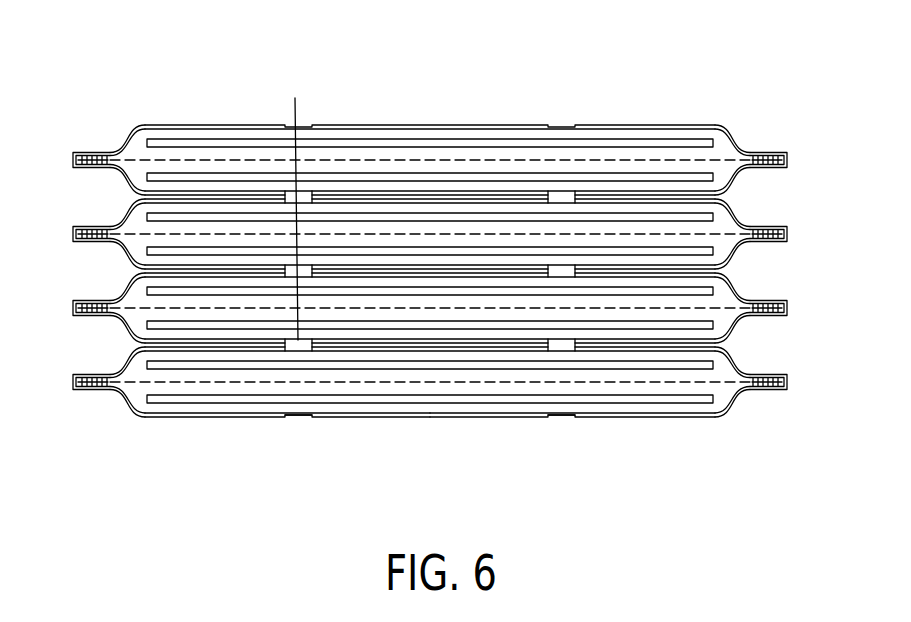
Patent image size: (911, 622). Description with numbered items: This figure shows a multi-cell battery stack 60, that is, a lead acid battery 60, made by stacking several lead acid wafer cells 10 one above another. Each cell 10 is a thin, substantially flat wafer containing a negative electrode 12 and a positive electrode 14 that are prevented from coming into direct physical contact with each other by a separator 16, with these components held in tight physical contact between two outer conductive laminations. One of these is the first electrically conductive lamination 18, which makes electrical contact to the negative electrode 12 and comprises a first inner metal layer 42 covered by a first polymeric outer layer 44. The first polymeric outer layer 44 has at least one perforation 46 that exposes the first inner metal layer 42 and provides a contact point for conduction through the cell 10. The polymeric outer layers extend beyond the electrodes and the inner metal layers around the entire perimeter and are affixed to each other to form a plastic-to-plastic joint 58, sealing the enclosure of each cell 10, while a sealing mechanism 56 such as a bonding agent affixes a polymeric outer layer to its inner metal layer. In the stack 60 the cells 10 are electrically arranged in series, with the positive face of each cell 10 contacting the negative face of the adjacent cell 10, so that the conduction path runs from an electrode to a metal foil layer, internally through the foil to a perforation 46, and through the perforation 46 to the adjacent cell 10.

The lead acid wafer cell 10 is at (772, 132).
The negative electrode 12 is at (143, 352).
The positive electrode 14 is at (213, 403).
The separator 16 is at (137, 410).
The first electrically conductive lamination 18 is at (178, 418).
The first inner metal layer 42 is at (610, 403).
The first polymeric outer layer 44 is at (675, 417).
The perforation 46 is at (303, 424).
The sealing mechanism 56 is at (295, 204).
The plastic-to-plastic joint 58 is at (73, 382).
The multi-cell battery stack 60 is at (180, 80).